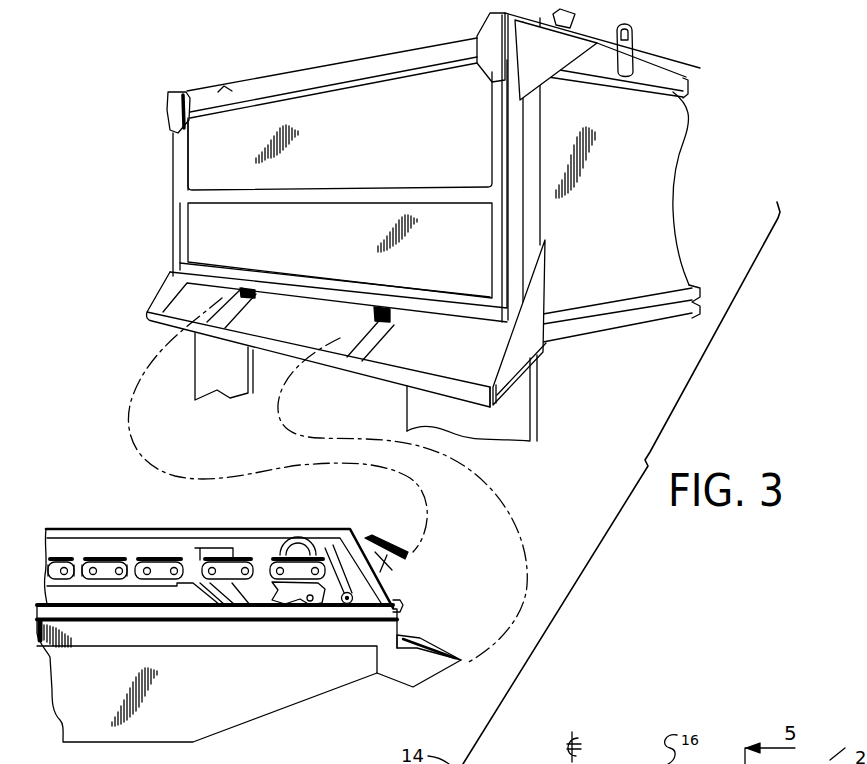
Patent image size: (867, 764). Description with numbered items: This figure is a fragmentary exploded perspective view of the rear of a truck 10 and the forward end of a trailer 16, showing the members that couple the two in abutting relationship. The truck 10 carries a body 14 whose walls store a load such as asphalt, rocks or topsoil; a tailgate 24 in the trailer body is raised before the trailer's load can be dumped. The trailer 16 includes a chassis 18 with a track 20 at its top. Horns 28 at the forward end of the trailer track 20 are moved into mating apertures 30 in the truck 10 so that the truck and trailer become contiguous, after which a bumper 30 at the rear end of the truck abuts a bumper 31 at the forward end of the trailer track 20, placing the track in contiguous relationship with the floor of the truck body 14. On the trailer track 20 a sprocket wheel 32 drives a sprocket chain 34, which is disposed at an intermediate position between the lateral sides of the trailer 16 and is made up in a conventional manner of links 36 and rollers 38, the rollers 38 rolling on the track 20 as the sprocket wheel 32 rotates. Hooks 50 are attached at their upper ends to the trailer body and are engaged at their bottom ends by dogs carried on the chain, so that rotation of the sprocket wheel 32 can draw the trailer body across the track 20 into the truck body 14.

The truck 10 is at (708, 89).
The body 14 is at (657, 155).
The tailgate 24 is at (207, 162).
The mating apertures / bumper 30 is at (316, 348).
The hooks 50 is at (385, 324).
The trailer 16 is at (101, 466).
The chassis 18 is at (273, 697).
The track 20 is at (176, 548).
The sprocket chain 34 is at (128, 560).
The links 36 is at (92, 559).
The rollers 38 is at (210, 560).
The horns 28 is at (388, 558).
The bumper 31 is at (398, 608).
The sprocket wheel 32 is at (283, 595).